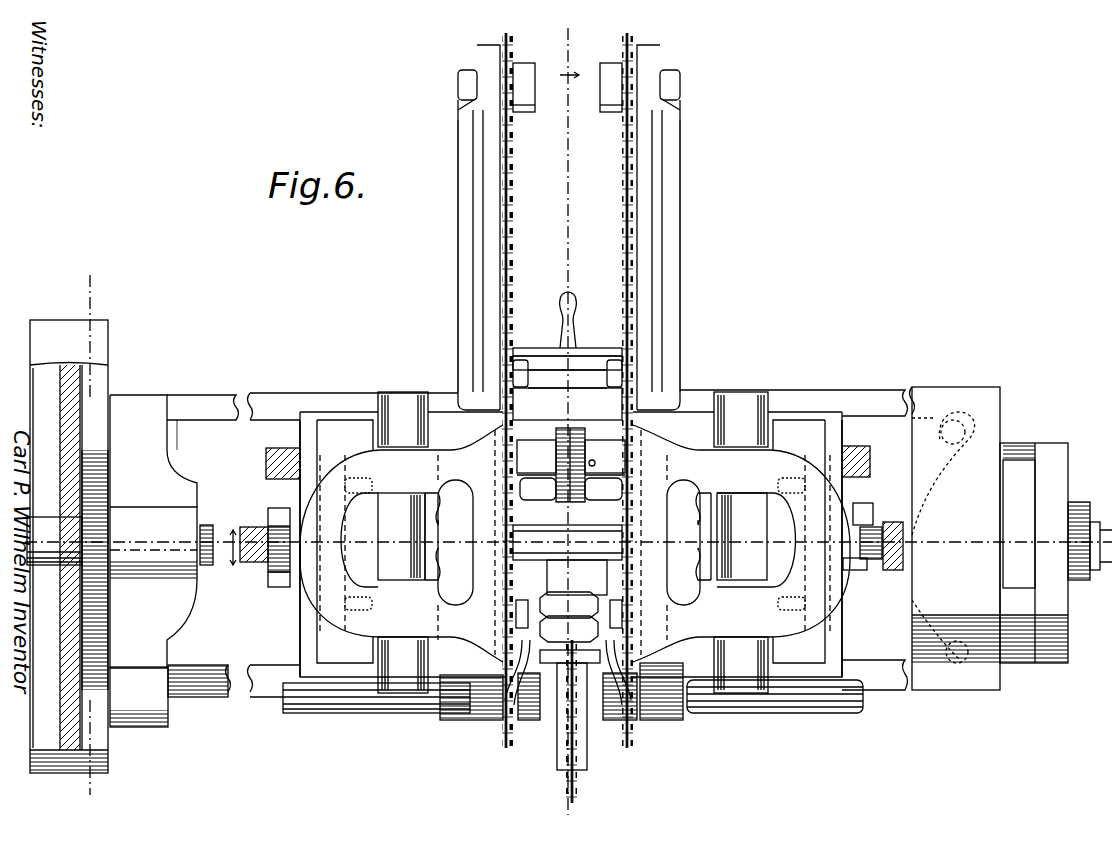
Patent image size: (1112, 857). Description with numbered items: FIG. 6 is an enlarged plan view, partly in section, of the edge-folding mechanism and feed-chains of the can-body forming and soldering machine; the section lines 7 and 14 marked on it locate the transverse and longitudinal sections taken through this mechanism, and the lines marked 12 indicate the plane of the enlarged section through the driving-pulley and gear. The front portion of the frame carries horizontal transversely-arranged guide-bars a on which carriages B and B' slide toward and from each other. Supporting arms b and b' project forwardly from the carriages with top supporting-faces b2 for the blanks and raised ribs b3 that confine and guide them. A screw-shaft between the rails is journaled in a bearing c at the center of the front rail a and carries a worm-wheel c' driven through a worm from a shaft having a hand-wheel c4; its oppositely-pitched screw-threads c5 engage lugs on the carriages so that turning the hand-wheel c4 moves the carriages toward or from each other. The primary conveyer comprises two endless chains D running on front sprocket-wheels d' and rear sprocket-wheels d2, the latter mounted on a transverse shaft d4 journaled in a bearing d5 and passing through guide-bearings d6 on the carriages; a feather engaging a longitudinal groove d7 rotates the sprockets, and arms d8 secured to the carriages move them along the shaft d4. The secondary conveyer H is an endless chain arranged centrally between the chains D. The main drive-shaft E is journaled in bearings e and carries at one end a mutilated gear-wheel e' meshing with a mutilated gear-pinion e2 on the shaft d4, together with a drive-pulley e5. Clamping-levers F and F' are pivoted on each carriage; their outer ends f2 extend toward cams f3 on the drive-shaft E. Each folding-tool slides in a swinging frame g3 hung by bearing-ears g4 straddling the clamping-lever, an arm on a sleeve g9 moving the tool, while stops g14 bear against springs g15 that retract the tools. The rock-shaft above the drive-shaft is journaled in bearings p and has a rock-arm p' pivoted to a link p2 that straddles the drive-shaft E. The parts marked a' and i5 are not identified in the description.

The section line 14 14 is at (575, 414).
The section line 12 is at (88, 533).
The section line 7 7 is at (225, 547).
The main drive-shaft E is at (230, 522).
The supporting arm or bracket b' is at (466, 227).
The supporting arm or bracket b is at (665, 227).
The top horizontal supporting-faces b2 is at (473, 245).
The raised flanges or ribs b3 is at (574, 256).
The endless chains of primary conveyer D is at (513, 246).
The secondary conveyer H is at (560, 786).
The front sprocket-wheels d' is at (567, 75).
The hand-wheel c4 is at (540, 350).
The worm-wheel c' is at (562, 465).
The bearing c is at (571, 470).
The clamp bracket i5 is at (568, 632).
The arms d8 is at (537, 722).
The rear sprocket-wheels d2 is at (572, 714).
The guide-bearings d6 is at (685, 735).
The longitudinal groove d7 is at (350, 713).
The transversely-arranged shaft d4 is at (782, 713).
The rails or guide-bars a is at (537, 545).
The swinging frame g3 is at (352, 420).
The carriage B' is at (285, 548).
The carriage B is at (850, 548).
The bearing-ears g4 is at (573, 542).
The clamping-lever F is at (401, 543).
The clamping-lever F' is at (741, 543).
The yoke hub a' is at (568, 540).
The sleeve g9 is at (572, 536).
The springs g15 is at (582, 536).
The upwardly-projecting stops g14 is at (582, 565).
The oppositely-pitched screw-threads c5 is at (571, 457).
The outer end of clamping-lever f2 is at (575, 540).
The cam f3 is at (276, 575).
The drive-pulley e5 is at (69, 546).
The mutilated gear-pinion e2 is at (98, 680).
The mutilated gear-wheel e' is at (153, 451).
The bearings e is at (153, 531).
The bearing d5 is at (139, 697).
The bearings p is at (955, 538).
The rock-arm p' is at (990, 553).
The link p2 is at (1079, 502).